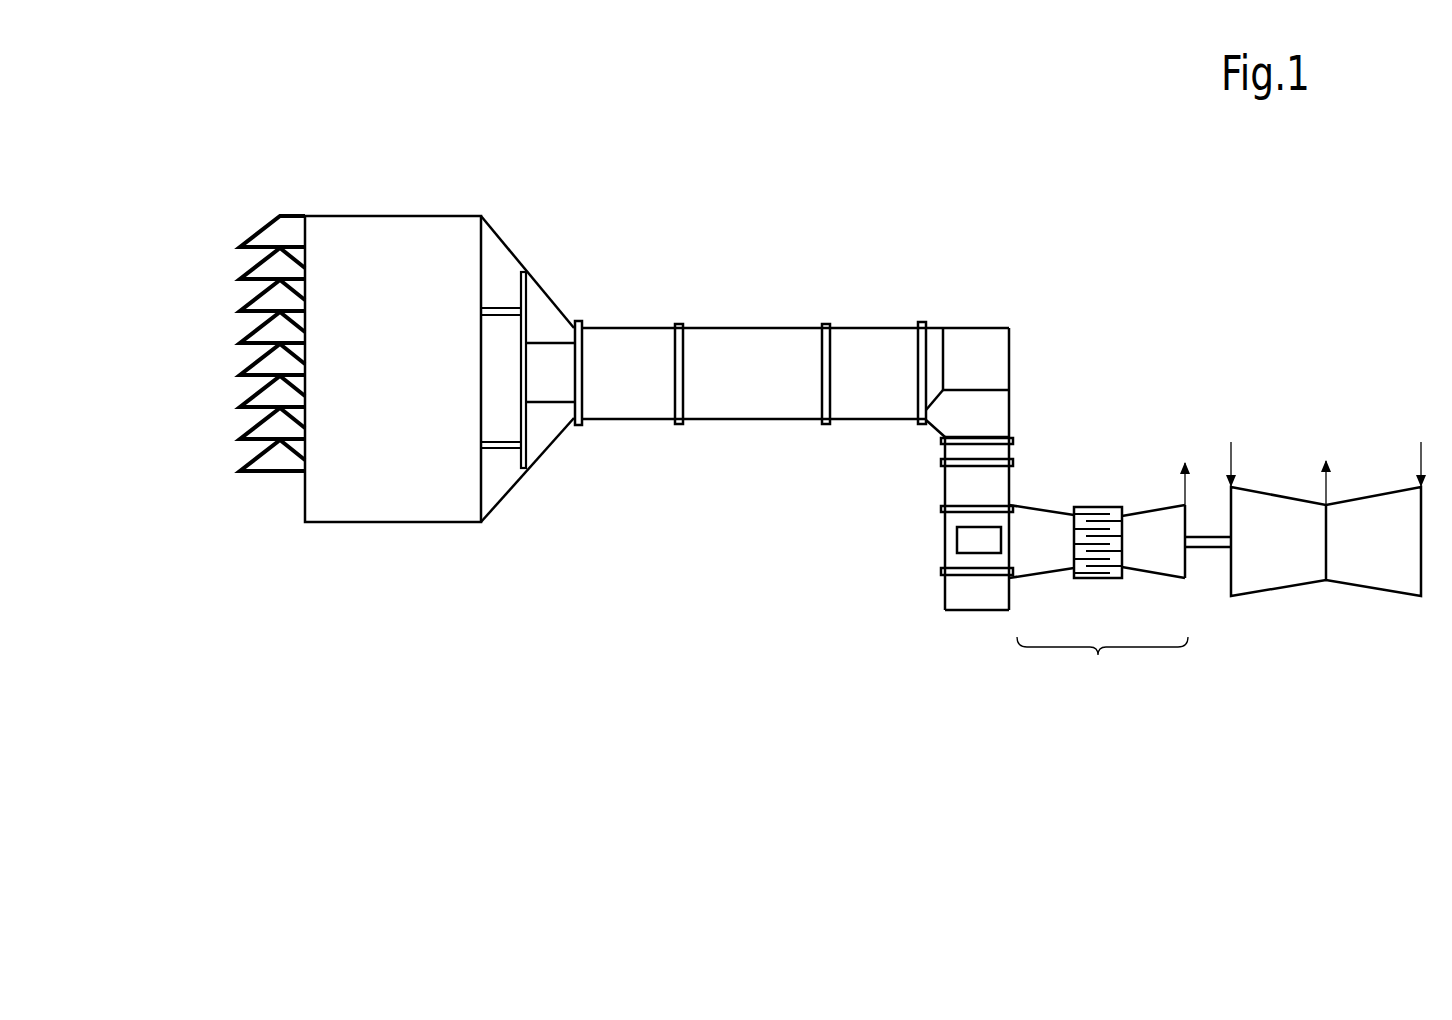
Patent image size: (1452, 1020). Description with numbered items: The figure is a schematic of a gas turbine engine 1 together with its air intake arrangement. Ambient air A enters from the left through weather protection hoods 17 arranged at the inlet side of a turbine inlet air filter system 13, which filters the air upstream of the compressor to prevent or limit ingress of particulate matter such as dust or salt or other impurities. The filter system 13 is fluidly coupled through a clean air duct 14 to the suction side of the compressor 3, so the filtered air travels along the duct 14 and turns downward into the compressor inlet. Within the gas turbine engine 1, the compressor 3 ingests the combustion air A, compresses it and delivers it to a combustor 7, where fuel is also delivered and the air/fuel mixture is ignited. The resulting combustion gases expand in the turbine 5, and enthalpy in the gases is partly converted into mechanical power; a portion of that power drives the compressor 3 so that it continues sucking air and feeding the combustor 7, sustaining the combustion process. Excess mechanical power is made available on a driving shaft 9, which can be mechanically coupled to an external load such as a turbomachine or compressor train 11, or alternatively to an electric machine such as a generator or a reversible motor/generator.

The gas turbine engine 1 is at (1098, 655).
The compressor 3 is at (1032, 573).
The turbine 5 is at (1148, 566).
The combustor 7 is at (1095, 510).
The driving shaft 9 is at (1200, 537).
The compressor train 11 is at (1360, 484).
The turbine inlet air filter system 13 is at (389, 205).
The clean air duct 14 is at (611, 433).
The weather protection hoods 17 is at (268, 481).
The ambient air A is at (223, 288).